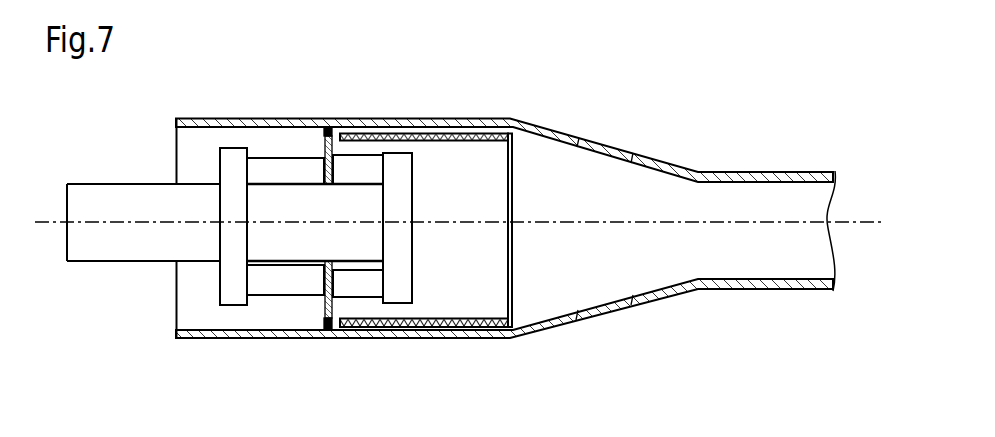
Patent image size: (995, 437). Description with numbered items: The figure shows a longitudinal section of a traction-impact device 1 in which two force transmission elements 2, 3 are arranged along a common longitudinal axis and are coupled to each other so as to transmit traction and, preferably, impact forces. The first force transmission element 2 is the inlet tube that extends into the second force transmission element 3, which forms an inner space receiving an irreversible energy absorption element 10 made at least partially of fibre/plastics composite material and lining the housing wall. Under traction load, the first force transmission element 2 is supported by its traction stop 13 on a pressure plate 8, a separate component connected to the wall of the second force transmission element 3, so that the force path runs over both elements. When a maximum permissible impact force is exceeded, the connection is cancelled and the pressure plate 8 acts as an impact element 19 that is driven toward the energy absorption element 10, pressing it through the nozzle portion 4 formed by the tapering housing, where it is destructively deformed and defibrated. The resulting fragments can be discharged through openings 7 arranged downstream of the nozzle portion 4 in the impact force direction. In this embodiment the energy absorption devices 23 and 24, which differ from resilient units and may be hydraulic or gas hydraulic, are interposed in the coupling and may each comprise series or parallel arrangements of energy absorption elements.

The traction-impact device 1 is at (460, 225).
The first force transmission element 2 is at (116, 250).
The second force transmission element 3 is at (556, 137).
The nozzle portion 4 is at (549, 336).
The openings 7 is at (607, 309).
The pressure plate 8 is at (321, 266).
The impact element 19 is at (326, 306).
The energy absorption element 10 is at (436, 323).
The traction stop 13 is at (381, 247).
The energy absorption device 23 is at (268, 283).
The energy absorption device 24 is at (369, 283).